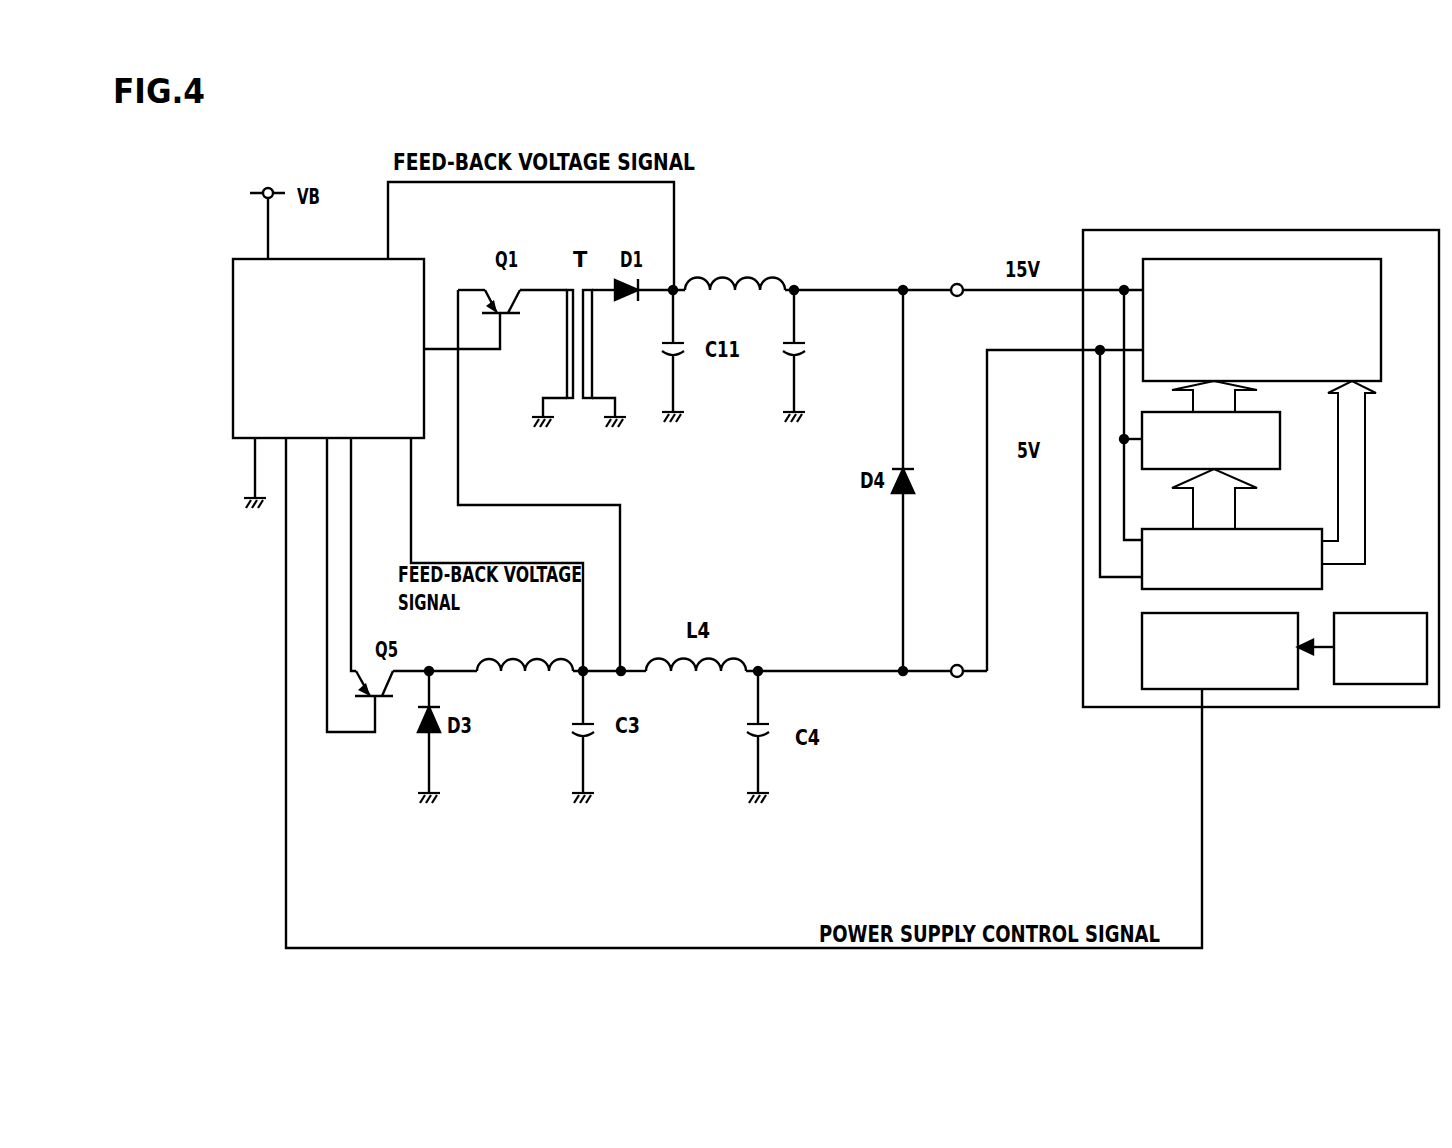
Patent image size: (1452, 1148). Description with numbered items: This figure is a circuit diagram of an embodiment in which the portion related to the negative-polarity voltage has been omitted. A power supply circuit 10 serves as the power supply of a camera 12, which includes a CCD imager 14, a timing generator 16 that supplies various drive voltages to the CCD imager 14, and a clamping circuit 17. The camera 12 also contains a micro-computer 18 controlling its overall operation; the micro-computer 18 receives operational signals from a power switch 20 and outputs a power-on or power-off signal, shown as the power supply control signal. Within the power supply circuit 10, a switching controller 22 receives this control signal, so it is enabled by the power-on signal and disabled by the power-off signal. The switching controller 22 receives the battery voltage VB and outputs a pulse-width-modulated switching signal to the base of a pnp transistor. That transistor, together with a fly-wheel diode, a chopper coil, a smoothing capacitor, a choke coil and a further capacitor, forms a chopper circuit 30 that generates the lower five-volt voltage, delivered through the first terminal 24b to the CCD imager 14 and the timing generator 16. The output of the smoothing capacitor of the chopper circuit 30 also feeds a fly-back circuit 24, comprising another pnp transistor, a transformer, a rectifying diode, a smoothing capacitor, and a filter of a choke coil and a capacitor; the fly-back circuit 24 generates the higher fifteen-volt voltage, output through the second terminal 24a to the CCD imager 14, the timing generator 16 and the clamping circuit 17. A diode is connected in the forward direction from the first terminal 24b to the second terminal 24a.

The power supply circuit 10 is at (837, 185).
The camera 12 is at (1231, 242).
The CCD imager 14 is at (1385, 300).
The timing generator 16 is at (1310, 577).
The clamping circuit 17 is at (1274, 439).
The micro-computer 18 is at (1173, 635).
The power switch 20 is at (1380, 622).
The switching controller 22 is at (273, 278).
The fly-back circuit 24 is at (875, 266).
The second terminal 24a is at (963, 283).
The first terminal 24b is at (960, 680).
The chopper circuit 30 is at (455, 658).